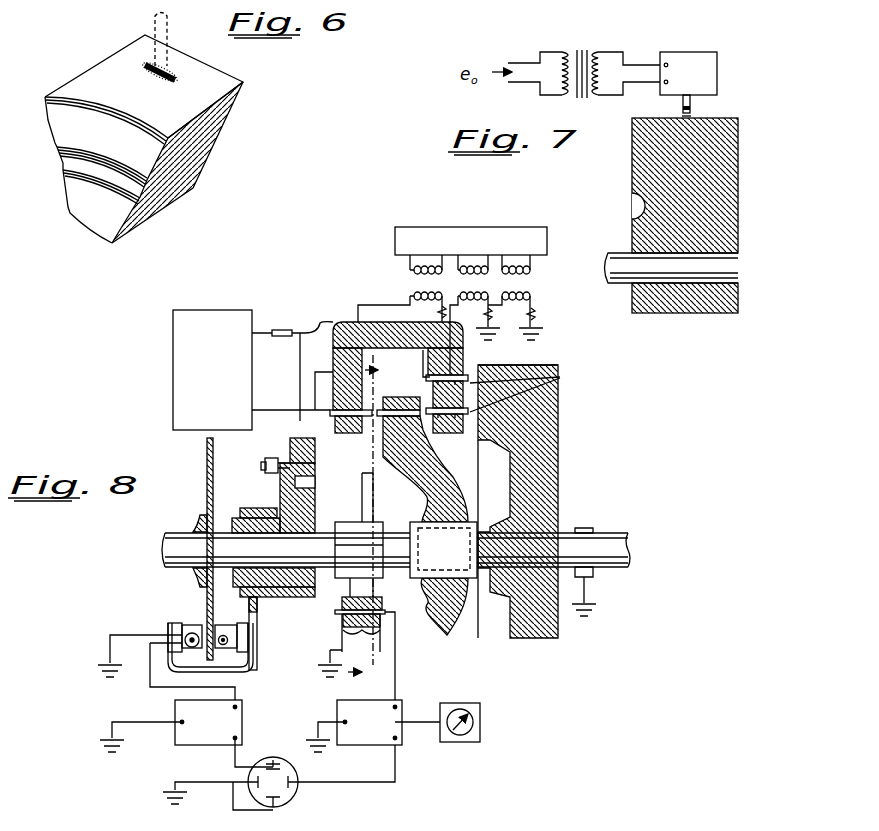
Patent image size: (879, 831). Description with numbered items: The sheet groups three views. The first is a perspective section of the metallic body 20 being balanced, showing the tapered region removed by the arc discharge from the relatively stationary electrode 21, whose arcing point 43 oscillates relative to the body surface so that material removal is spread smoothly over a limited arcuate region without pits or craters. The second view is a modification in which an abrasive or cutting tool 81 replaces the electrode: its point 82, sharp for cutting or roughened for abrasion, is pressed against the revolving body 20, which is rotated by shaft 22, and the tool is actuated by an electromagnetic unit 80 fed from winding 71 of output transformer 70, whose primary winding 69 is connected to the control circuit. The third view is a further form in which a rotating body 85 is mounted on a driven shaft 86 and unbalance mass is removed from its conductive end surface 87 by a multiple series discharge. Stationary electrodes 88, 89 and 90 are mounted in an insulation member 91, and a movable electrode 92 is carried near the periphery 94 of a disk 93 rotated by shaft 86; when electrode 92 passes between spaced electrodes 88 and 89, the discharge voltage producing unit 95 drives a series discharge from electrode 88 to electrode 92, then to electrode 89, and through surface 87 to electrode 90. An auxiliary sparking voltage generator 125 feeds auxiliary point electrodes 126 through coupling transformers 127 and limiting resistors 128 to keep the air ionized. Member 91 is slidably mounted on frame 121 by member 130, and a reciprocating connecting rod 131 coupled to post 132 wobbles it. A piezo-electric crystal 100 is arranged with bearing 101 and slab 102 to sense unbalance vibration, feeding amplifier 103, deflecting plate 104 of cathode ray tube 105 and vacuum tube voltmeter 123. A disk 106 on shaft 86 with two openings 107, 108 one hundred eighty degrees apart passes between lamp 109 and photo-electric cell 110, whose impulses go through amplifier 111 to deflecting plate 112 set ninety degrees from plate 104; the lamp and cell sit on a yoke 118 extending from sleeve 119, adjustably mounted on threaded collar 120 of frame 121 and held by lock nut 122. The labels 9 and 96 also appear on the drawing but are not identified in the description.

In FIG. 6, the metallic body 20 is at (227, 68).
In FIG. 7, the metallic body 20 is at (634, 150).
In FIG. 6, the stationary electrode 21 is at (156, 25).
In FIG. 6, the arcing point 43 is at (173, 63).
In FIG. 7, the primary winding 69 is at (568, 56).
In FIG. 7, the output transformer 70 is at (587, 43).
In FIG. 7, the winding 71 is at (598, 56).
In FIG. 7, the electromagnetic unit 80 is at (702, 62).
In FIG. 7, the cutting tool 81 is at (690, 103).
In FIG. 7, the tool point 82 is at (682, 110).
In FIG. 7, the shaft 22 is at (619, 258).
In FIG. 8, the auxiliary sparking voltage generator 125 is at (457, 236).
In FIG. 8, the coupling transformers 127 is at (413, 281).
In FIG. 8, the limiting resistors 128 is at (440, 312).
In FIG. 8, the capacitor 96 is at (282, 330).
In FIG. 8, the discharge voltage producing unit 95 is at (212, 370).
In FIG. 8, the axis 9 is at (373, 518).
In FIG. 8, the insulation member 91 is at (397, 390).
In FIG. 8, the periphery of disk 94 is at (416, 400).
In FIG. 8, the auxiliary point electrodes 126 is at (458, 375).
In FIG. 8, the electrode 90 is at (490, 366).
In FIG. 8, the electrode 89 is at (527, 390).
In FIG. 8, the rotating body 85 is at (558, 416).
In FIG. 8, the electrode 88 is at (348, 418).
In FIG. 8, the end surface 87 is at (477, 433).
In FIG. 8, the reciprocating connecting rod 131 is at (271, 458).
In FIG. 8, the post 132 is at (261, 466).
In FIG. 8, the opening 107 is at (207, 462).
In FIG. 8, the disk 106 is at (207, 498).
In FIG. 8, the lock nut 122 is at (252, 510).
In FIG. 8, the member 130 is at (321, 485).
In FIG. 8, the frame 121 is at (297, 515).
In FIG. 8, the movable electrode 92 is at (381, 497).
In FIG. 8, the rotating disk 93 is at (418, 492).
In FIG. 8, the shaft 86 is at (165, 547).
In FIG. 8, the opening 108 is at (208, 635).
In FIG. 8, the light source 109 is at (230, 652).
In FIG. 8, the photo-electric cell 110 is at (191, 650).
In FIG. 8, the yoke 118 is at (245, 673).
In FIG. 8, the sleeve 119 is at (260, 610).
In FIG. 8, the collar 120 is at (280, 595).
In FIG. 8, the bearing 101 is at (342, 578).
In FIG. 8, the slab 102 is at (370, 585).
In FIG. 8, the piezo-electric crystal 100 is at (386, 611).
In FIG. 8, the amplifier 111 is at (242, 720).
In FIG. 8, the deflecting plate 112 is at (278, 762).
In FIG. 8, the amplifier 103 is at (360, 745).
In FIG. 8, the deflecting plate 104 is at (290, 780).
In FIG. 8, the cathode ray tube 105 is at (292, 801).
In FIG. 8, the vacuum tube voltmeter 123 is at (480, 722).